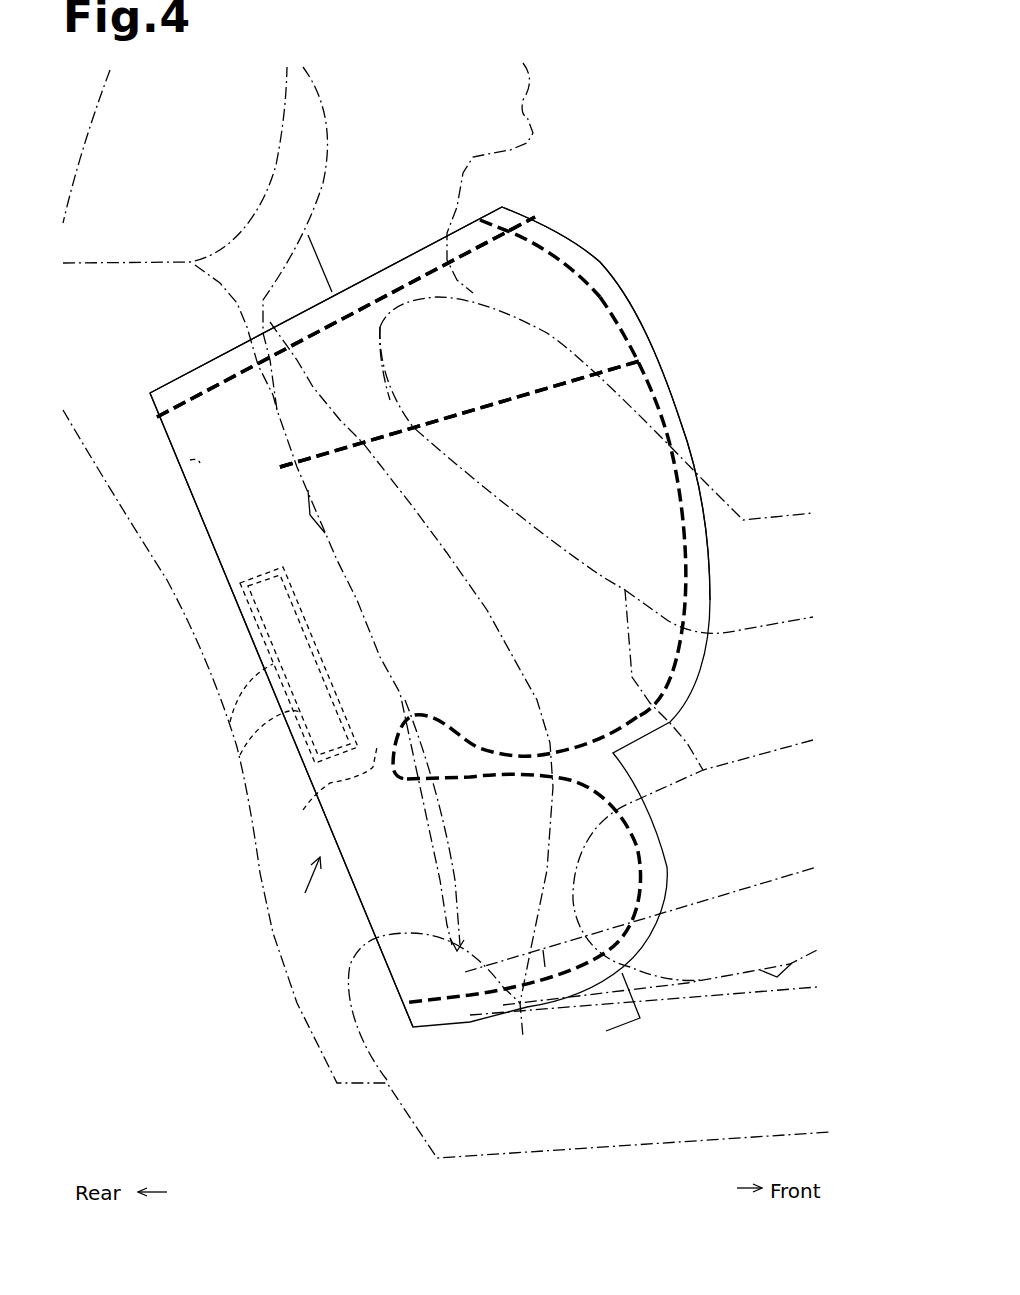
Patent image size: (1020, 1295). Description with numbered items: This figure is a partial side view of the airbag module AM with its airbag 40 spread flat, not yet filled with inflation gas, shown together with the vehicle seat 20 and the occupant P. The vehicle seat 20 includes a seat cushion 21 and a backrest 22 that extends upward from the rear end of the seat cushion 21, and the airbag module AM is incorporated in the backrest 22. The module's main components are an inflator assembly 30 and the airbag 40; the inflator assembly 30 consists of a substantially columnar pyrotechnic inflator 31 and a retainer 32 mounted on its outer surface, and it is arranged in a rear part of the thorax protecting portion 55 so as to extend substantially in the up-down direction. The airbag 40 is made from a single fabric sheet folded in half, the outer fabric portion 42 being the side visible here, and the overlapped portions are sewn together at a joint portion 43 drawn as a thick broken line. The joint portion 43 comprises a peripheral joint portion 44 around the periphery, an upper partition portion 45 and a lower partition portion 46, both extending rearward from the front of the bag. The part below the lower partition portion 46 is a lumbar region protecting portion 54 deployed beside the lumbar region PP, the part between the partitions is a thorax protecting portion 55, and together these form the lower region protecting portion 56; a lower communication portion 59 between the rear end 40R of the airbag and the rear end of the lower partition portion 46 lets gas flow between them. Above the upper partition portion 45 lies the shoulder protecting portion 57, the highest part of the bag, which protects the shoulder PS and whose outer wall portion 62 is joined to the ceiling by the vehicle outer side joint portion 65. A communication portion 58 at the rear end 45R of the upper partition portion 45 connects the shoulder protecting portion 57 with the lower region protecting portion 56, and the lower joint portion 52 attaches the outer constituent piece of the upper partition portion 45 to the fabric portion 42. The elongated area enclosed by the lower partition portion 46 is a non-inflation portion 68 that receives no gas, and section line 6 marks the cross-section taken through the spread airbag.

The section line 6- 6 is at (308, 235).
The occupant P is at (527, 117).
The shoulder PS is at (380, 340).
The vehicle outer side joint portion 65 is at (419, 272).
The outer wall portion 62 is at (560, 267).
The fabric portion 42 is at (607, 277).
The airbag 40 is at (667, 325).
The shoulder protecting portion 57 is at (571, 533).
The upper partition portion 45 is at (453, 413).
The lower joint portion 52 is at (461, 409).
The joint portion 43 is at (476, 498).
The peripheral joint portion 44 is at (640, 387).
The communication portion 58 is at (190, 460).
The rear end of upper partition portion 45R is at (277, 467).
The thorax protecting portion 55 is at (346, 404).
The lower region protecting portion 56 is at (399, 610).
The lower partition portion 46 is at (515, 728).
The non-inflation portion 68 is at (452, 757).
The inflator assembly 30 is at (250, 670).
The inflator 31 is at (231, 725).
The retainer 32 is at (242, 755).
The lumbar region protecting portion 54 is at (522, 888).
The lower communication portion 59 is at (323, 794).
The airbag module AM is at (299, 887).
The rear end of airbag 40R is at (367, 910).
The seat cushion 21 is at (770, 975).
The backrest 22 is at (297, 1003).
The vehicle seat 20 is at (446, 784).
The lumbar region PP is at (411, 695).